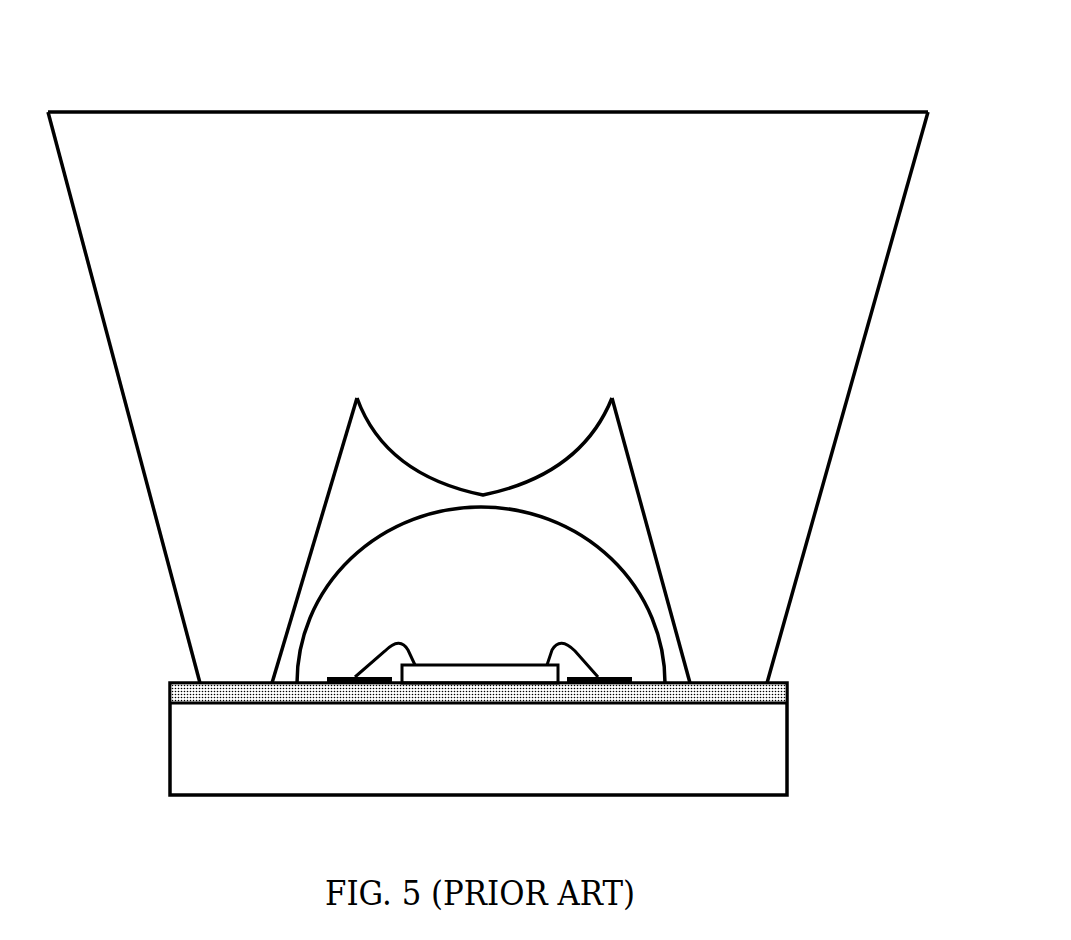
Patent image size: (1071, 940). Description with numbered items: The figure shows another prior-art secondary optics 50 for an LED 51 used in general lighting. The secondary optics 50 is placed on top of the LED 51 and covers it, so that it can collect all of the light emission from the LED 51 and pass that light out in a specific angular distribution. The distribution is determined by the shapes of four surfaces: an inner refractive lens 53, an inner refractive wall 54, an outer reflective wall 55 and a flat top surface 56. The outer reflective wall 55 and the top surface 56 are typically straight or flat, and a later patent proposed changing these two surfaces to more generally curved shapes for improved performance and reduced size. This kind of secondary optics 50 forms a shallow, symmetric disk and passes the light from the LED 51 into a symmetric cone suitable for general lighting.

The secondary optics 50 is at (878, 38).
The LED 51 is at (530, 615).
The inner refractive lens 53 is at (405, 457).
The inner refractive wall 54 is at (312, 538).
The outer reflective wall 55 is at (105, 318).
The flat top surface 56 is at (538, 108).